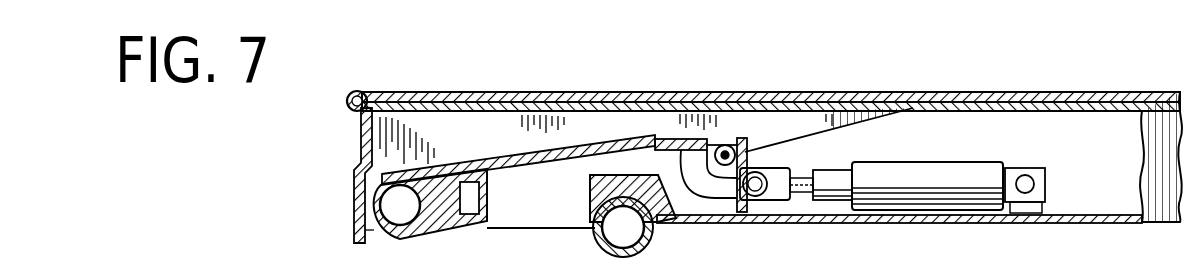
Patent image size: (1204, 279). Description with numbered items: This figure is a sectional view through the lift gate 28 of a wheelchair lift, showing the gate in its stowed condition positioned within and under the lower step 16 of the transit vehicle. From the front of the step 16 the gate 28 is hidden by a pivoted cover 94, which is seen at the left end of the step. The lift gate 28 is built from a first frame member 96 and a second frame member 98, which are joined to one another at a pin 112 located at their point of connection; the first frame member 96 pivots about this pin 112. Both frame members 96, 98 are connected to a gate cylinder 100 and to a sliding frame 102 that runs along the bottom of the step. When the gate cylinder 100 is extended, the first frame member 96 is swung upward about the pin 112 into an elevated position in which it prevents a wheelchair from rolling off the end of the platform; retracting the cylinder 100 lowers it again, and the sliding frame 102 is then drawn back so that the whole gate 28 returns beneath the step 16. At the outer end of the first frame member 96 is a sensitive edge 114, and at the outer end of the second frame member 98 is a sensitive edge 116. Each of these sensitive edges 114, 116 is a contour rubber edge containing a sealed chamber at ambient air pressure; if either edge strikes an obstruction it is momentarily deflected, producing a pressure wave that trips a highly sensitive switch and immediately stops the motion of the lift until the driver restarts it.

The lower step 16 is at (652, 92).
The lift gate 28 is at (547, 233).
The pivoted cover 94 is at (361, 190).
The first frame member 96 is at (512, 152).
The second frame member 98 is at (750, 151).
The gate cylinder 100 is at (917, 163).
The sliding frame 102 is at (895, 223).
The pin 112 is at (723, 145).
The sensitive edge 114 is at (420, 241).
The sensitive edge 116 is at (613, 246).